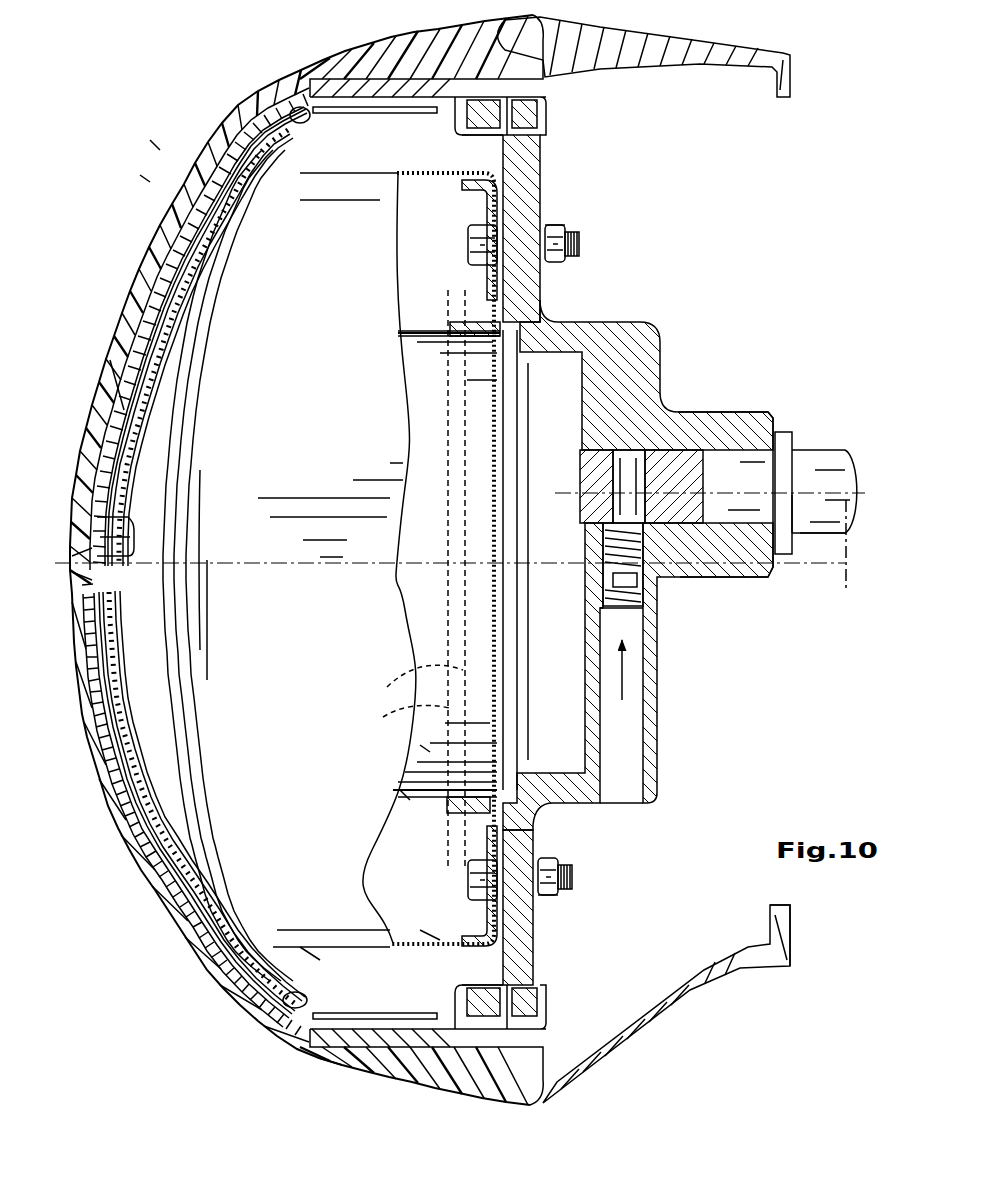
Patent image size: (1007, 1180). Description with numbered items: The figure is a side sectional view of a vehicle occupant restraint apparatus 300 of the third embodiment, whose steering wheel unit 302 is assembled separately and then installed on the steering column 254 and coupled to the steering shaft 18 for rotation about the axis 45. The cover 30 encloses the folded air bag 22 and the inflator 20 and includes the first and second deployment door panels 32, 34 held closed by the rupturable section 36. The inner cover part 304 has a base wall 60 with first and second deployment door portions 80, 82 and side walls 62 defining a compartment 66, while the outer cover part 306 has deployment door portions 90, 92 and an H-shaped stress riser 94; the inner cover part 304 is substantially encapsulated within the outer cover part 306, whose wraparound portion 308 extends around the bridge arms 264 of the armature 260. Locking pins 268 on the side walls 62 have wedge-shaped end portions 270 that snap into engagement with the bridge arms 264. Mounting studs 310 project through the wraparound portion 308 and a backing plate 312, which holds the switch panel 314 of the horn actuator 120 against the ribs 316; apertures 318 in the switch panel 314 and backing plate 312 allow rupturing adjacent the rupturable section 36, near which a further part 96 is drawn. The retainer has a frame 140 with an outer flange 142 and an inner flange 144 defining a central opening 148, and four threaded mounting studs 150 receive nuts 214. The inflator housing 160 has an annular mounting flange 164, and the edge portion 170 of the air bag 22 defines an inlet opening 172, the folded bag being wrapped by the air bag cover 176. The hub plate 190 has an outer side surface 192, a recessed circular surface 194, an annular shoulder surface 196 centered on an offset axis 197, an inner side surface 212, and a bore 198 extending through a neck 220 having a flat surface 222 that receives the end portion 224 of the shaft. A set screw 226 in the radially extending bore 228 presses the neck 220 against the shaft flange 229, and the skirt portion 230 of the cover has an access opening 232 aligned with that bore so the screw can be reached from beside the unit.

The steering shaft 18 is at (815, 580).
The inflator 20 is at (405, 797).
The air bag 22 is at (430, 935).
The cover 30 is at (235, 110).
The first deployment door panel 32 is at (112, 318).
The second deployment door panel 34 is at (92, 750).
The rupturable section 36 is at (55, 553).
The axis 45 is at (557, 490).
The base wall 60 is at (140, 300).
The side walls 62 is at (330, 1042).
The compartment 66 is at (377, 560).
The first deployment door portion 80 is at (112, 350).
The second deployment door portion 82 is at (85, 640).
The first deployment door portion 90 is at (100, 377).
The second deployment door portion 92 is at (90, 727).
The stress riser 94 is at (75, 570).
The tab portion 96 is at (75, 568).
The horn actuator 120 is at (175, 243).
The frame 140 is at (462, 262).
The outer flange 142 is at (455, 245).
The inner flange 144 is at (450, 335).
The central opening 148 is at (455, 707).
The mounting studs 150 is at (585, 245).
The housing 160 is at (425, 750).
The mounting flange 164 is at (460, 320).
The edge portion 170 is at (440, 840).
The inlet opening 172 is at (440, 797).
The air bag cover 176 is at (315, 960).
The hub plate 190 is at (600, 314).
The outer side surface 192 is at (470, 173).
The circular surface 194 is at (585, 680).
The shoulder surface 196 is at (503, 380).
The axis 197 is at (846, 590).
The bore 198 is at (741, 486).
The inner side surface 212 is at (545, 150).
The nuts 214 is at (555, 225).
The neck 220 is at (750, 425).
The flat surface 222 is at (810, 520).
The end portion 224 is at (685, 465).
The set screw 226 is at (620, 575).
The radially extending bore 228 is at (625, 670).
The flange 229 is at (782, 437).
The skirt portion 230 is at (787, 932).
The access opening 232 is at (620, 1042).
The steering column 254 is at (832, 440).
The armature 260 is at (575, 78).
The bridge arms 264 is at (548, 110).
The locking pins 268 is at (437, 25).
The end portions 270 is at (545, 185).
The vehicle occupant restraint apparatus 300 is at (155, 145).
The steering wheel unit 302 is at (145, 178).
The inner cover part 304 is at (285, 76).
The outer cover part 306 is at (305, 45).
The wraparound portion 308 is at (385, 107).
The mounting studs 310 is at (305, 135).
The backing plate 312 is at (175, 330).
The switch panel 314 is at (160, 340).
The ribs 316 is at (195, 292).
The apertures 318 is at (130, 570).